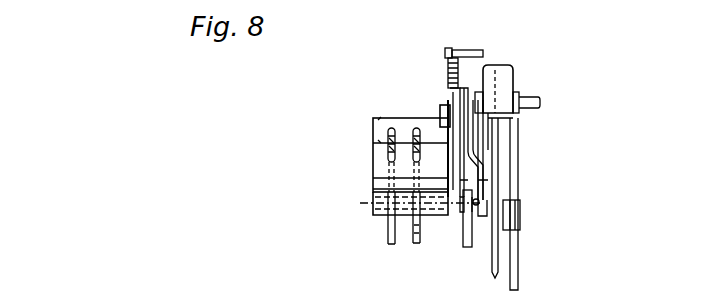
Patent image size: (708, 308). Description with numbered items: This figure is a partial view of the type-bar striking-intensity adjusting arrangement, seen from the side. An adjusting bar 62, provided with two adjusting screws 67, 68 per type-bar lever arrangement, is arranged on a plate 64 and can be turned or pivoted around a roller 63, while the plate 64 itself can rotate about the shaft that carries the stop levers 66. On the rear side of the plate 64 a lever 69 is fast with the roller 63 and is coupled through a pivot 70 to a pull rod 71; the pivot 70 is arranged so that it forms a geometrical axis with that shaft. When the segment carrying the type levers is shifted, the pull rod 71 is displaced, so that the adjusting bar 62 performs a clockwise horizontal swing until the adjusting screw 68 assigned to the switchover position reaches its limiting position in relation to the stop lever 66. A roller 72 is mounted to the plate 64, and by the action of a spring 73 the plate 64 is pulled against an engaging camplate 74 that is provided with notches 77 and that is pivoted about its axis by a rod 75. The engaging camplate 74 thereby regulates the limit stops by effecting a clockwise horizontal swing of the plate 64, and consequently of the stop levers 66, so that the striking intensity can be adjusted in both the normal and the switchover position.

The adjusting bar 62 is at (382, 162).
The roller 63 is at (443, 110).
The plate 64 is at (462, 181).
The stop levers 66 is at (419, 233).
The adjusting screw 67 is at (414, 128).
The adjusting screw 68 is at (415, 192).
The lever 69 is at (507, 158).
The pivot 70 is at (520, 206).
The pull rod 71 is at (495, 262).
The roller 72 is at (470, 92).
The spring 73 is at (448, 74).
The engaging camplate 74 is at (490, 140).
The rod 75 is at (518, 249).
The notches 77 is at (448, 214).